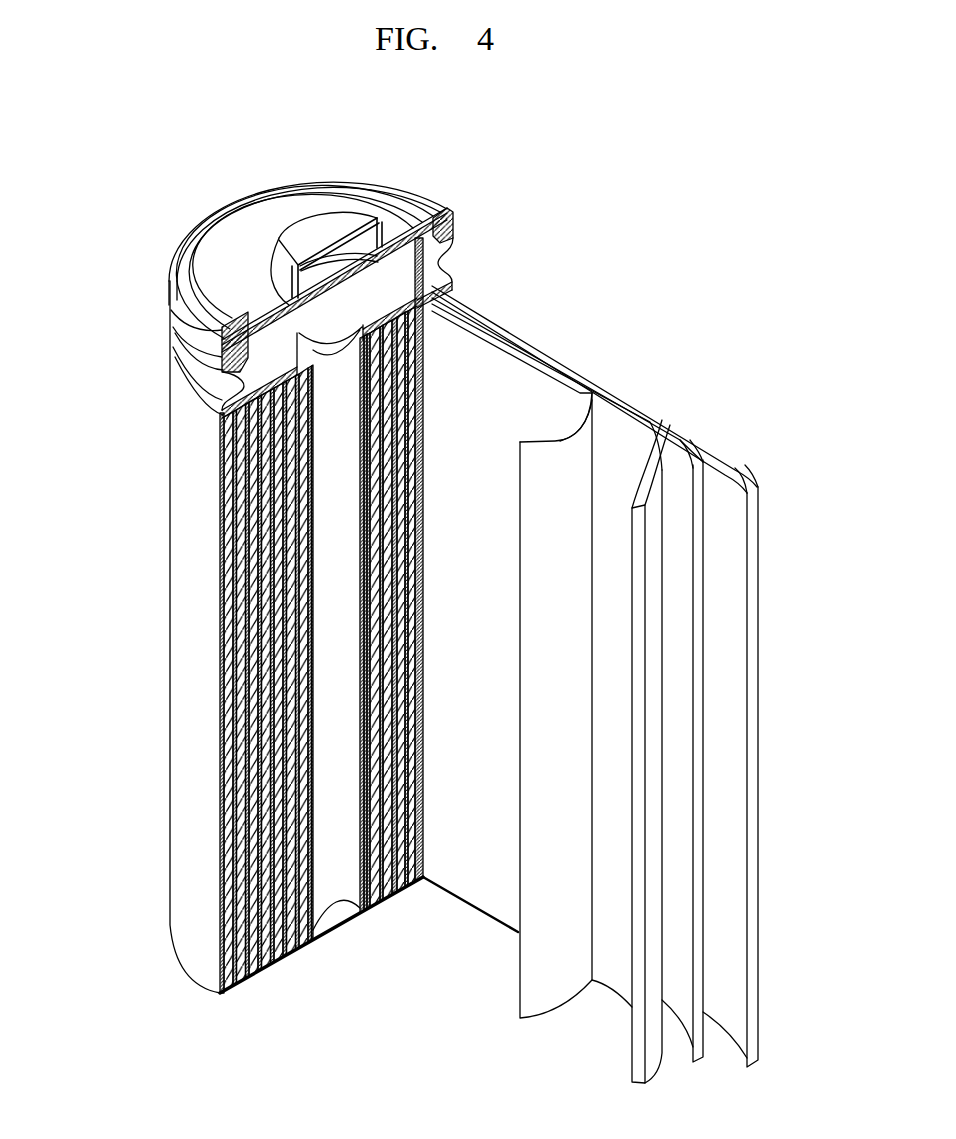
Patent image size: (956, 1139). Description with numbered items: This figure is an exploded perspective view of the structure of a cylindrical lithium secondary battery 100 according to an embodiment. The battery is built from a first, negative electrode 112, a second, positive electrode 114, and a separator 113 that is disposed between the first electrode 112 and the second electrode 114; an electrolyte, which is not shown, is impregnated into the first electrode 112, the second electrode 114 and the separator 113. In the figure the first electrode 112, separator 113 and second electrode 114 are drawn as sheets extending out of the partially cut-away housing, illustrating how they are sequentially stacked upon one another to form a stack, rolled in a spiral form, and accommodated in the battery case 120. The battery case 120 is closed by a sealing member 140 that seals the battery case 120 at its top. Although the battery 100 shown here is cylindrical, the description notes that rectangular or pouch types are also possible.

The lithium secondary battery 100 is at (512, 142).
The first electrode 112 is at (732, 458).
The separator 113 is at (557, 447).
The second electrode 114 is at (650, 453).
The battery case 120 is at (180, 634).
The sealing member 140 is at (305, 228).